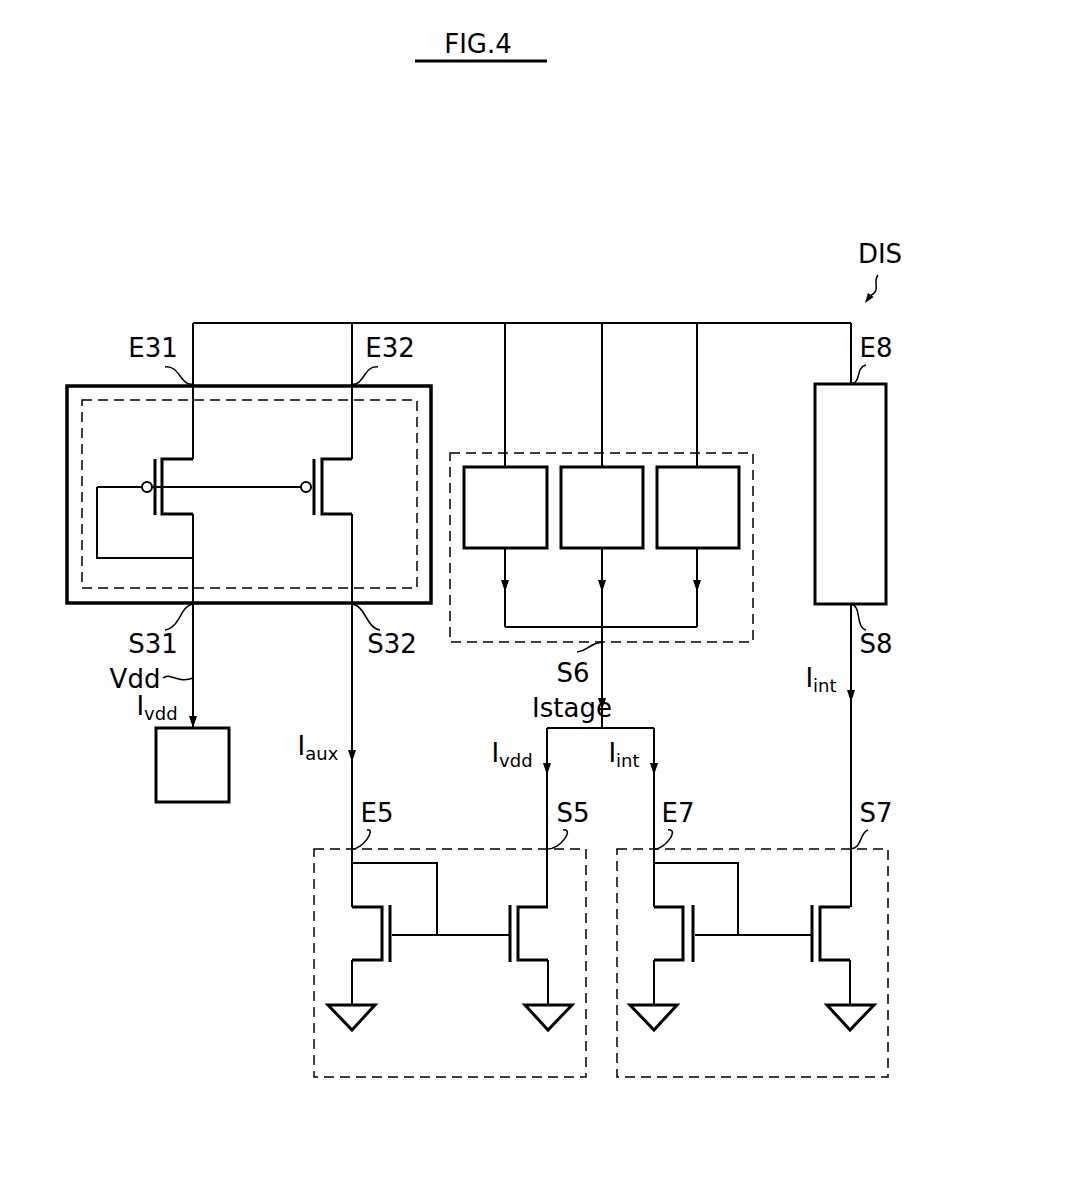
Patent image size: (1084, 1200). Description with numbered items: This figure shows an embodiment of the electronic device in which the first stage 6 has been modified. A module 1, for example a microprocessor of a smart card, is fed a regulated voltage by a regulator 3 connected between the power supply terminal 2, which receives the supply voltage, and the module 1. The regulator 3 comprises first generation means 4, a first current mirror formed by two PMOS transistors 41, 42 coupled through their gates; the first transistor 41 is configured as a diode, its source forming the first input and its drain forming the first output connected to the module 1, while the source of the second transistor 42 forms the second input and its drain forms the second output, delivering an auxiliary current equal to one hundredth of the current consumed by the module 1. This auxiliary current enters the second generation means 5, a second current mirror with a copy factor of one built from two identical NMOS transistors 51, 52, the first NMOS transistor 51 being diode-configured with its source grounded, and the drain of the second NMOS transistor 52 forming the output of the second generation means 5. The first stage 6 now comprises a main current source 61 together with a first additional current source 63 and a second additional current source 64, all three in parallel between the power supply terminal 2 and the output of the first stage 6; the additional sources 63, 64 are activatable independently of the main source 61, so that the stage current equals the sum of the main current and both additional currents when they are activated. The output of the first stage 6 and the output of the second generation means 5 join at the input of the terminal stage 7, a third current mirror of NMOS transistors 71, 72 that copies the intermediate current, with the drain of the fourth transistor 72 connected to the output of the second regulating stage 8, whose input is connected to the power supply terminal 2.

The module 1 is at (156, 767).
The power supply terminal 2 is at (193, 323).
The regulator 3 is at (92, 386).
The first generation means 4 is at (262, 400).
The first transistor 41 is at (208, 505).
The second transistor 42 is at (368, 505).
The second generation means 5 is at (440, 849).
The first NMOS transistor 51 is at (345, 925).
The second NMOS transistor 52 is at (555, 925).
The first stage 6 is at (626, 569).
The main current source 61 is at (512, 467).
The first additional current source 63 is at (608, 467).
The second additional current source 64 is at (703, 467).
The terminal stage 7 is at (742, 849).
The third transistor 71 is at (647, 925).
The fourth transistor 72 is at (857, 925).
The second regulating stage 8 is at (886, 497).